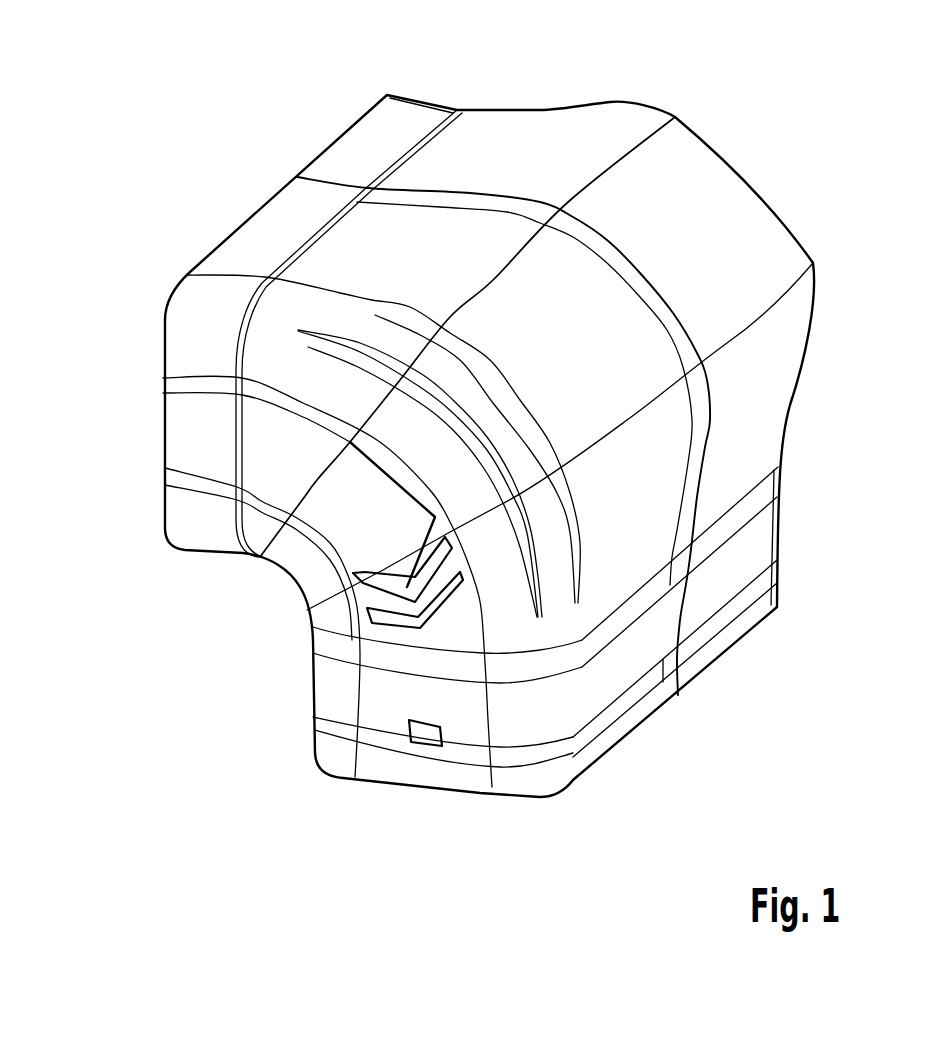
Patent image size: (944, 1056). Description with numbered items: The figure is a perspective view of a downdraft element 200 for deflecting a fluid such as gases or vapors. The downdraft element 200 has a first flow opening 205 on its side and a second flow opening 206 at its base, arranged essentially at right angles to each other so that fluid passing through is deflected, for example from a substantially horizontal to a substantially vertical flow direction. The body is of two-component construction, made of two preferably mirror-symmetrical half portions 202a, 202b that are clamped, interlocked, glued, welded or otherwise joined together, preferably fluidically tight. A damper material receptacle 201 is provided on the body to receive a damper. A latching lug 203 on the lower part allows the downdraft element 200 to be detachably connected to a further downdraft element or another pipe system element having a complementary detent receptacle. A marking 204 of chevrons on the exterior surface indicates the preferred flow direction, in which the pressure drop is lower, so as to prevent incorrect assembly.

The downdraft element 200 is at (233, 114).
The damper material receptacle 201 is at (727, 200).
The half portion 202a is at (527, 142).
The half portion 202b is at (607, 583).
The latching lug 203 is at (423, 742).
The marking 204 is at (347, 527).
The first flow opening 205 is at (142, 414).
The second flow opening 206 is at (709, 680).